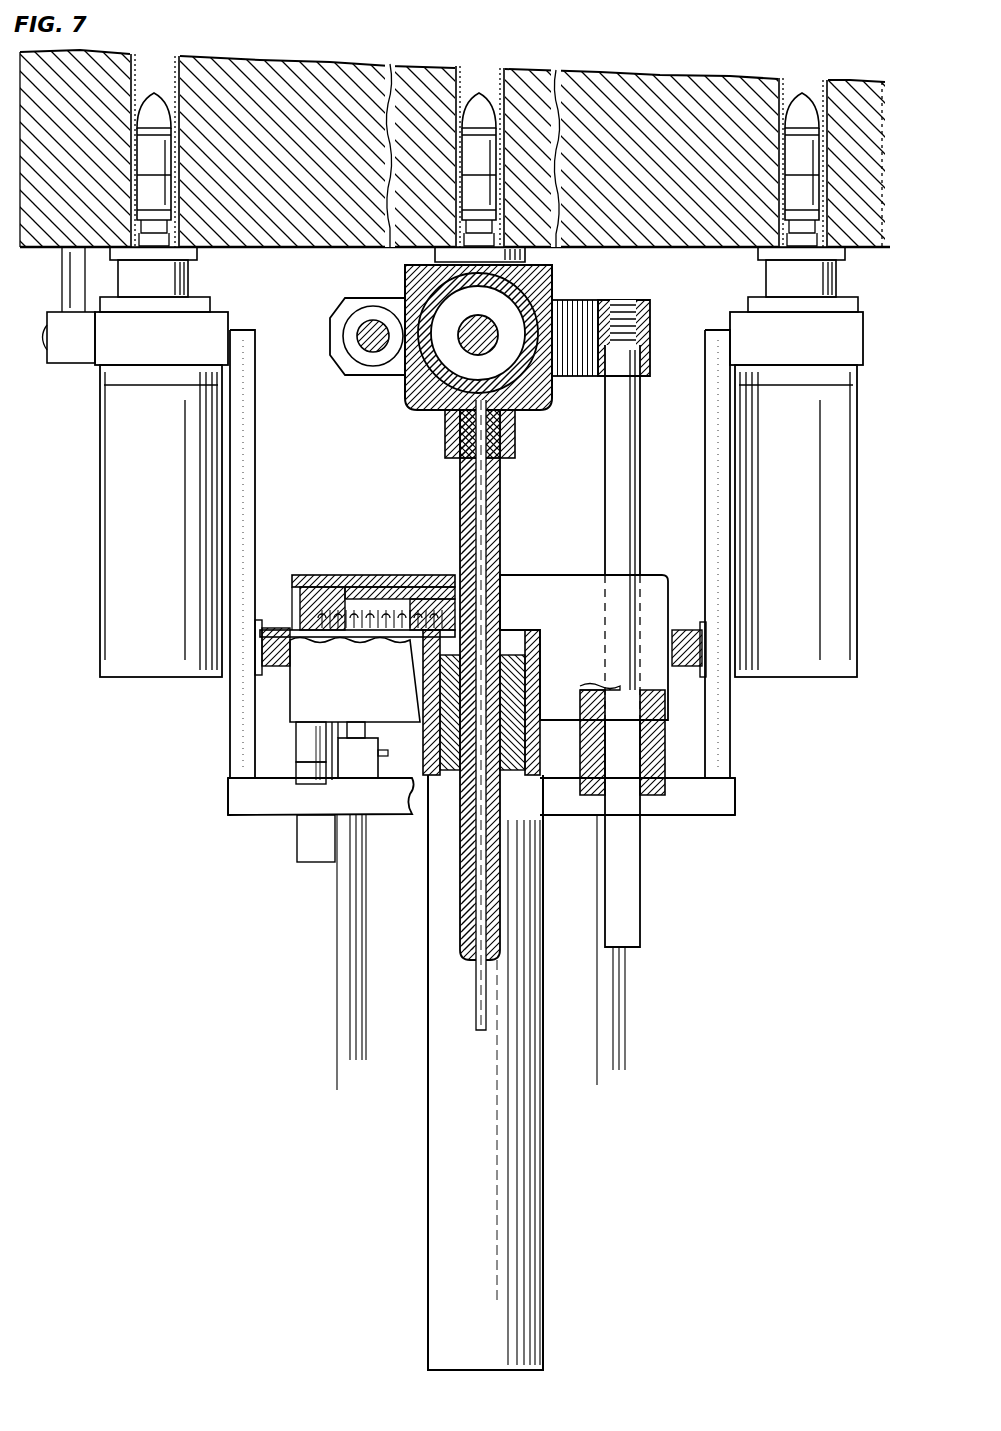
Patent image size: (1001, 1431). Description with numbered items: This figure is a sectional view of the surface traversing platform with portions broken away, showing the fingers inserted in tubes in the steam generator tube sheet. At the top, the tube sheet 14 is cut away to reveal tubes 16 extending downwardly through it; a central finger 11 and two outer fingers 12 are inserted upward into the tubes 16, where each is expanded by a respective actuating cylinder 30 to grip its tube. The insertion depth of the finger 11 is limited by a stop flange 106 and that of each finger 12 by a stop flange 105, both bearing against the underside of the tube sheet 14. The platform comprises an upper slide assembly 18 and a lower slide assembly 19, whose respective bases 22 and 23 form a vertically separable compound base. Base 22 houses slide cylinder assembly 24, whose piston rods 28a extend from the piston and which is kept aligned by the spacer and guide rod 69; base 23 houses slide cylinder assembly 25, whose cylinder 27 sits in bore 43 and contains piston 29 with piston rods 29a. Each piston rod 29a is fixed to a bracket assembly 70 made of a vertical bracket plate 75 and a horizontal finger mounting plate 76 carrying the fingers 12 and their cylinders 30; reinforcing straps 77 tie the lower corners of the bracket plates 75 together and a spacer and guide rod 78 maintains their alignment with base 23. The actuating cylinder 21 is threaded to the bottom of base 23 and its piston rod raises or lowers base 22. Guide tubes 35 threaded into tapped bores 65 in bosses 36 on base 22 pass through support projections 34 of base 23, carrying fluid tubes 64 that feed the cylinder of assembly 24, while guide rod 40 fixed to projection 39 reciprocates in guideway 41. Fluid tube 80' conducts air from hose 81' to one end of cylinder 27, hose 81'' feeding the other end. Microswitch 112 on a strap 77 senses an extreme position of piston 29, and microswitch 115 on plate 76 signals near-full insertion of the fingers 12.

The expandable fingers 11 is at (484, 93).
The expandable fingers 12 is at (152, 95).
The tube sheet 14 is at (668, 84).
The tubes 16 is at (170, 68).
The slide assembly 18 is at (572, 292).
The slide assembly 19 is at (524, 576).
The actuating cylinder 21 is at (490, 1160).
The base housing 22 is at (406, 396).
The base housing 23 is at (345, 592).
The slide cylinder assembly 24 is at (540, 385).
The slide cylinder assembly 25 is at (320, 592).
The cylinder 27 is at (416, 592).
The piston rods 28a is at (490, 318).
The piston 29 is at (442, 590).
The piston rods 29a is at (285, 652).
The actuating cylinder 30 is at (165, 502).
The support projections 34 is at (528, 665).
The guide tubes 35 is at (500, 496).
The tubular bosses 36 is at (446, 437).
The projection 39 is at (650, 304).
The guide rod 40 is at (606, 437).
The guideway 41 is at (655, 797).
The bore 43 is at (292, 592).
The fluid tubes 64 is at (470, 486).
The tapped bores 65 is at (500, 438).
The spacer and guide rod 69 is at (372, 322).
The bracket assemblies 70 is at (244, 456).
The bracket plate 75 is at (242, 418).
The finger mounting plate 76 is at (220, 320).
The reinforcing straps 77 is at (700, 812).
The spacer and guide rod 78 is at (274, 668).
The fluid tube 80' is at (346, 775).
The fluid hose 81' is at (329, 952).
The fluid hose 81'' is at (639, 950).
The stop flange 105 is at (198, 252).
The stop flange 106 is at (526, 255).
The microswitch 112 is at (362, 770).
The microswitch 115 is at (90, 350).